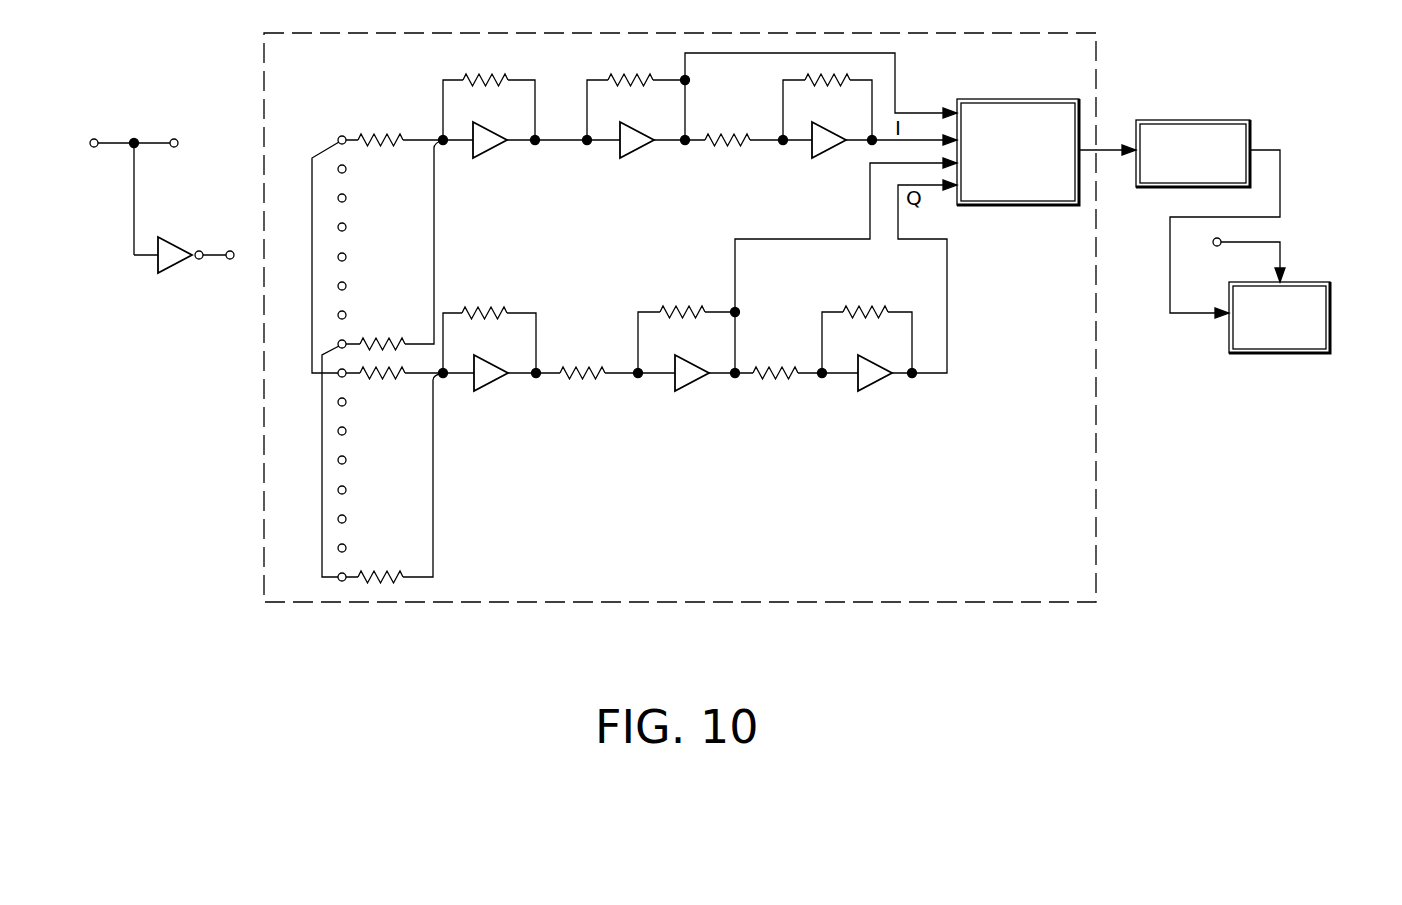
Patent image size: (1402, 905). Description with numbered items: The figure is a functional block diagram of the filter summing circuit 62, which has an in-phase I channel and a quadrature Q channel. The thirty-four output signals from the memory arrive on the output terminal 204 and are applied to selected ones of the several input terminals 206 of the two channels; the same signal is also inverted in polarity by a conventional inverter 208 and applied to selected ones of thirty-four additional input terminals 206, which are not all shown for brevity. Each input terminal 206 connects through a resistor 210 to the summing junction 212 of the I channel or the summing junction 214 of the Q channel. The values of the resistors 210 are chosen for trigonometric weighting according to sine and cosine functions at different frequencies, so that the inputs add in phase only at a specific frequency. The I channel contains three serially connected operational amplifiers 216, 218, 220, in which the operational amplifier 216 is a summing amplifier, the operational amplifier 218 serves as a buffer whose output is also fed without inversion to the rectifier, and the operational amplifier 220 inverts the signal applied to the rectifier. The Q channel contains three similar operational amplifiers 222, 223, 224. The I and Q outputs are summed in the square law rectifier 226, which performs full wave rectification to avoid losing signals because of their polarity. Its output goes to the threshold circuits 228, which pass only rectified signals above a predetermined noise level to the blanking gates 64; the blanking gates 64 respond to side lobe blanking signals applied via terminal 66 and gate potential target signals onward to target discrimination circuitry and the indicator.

The output terminal 204 is at (95, 138).
The inverter 208 is at (187, 247).
The filter summing circuit 62 is at (1100, 492).
The input terminals 206 is at (339, 137).
The resistor 210 is at (395, 136).
The summing junction 212 is at (445, 146).
The summing junction 214 is at (445, 379).
The operational amplifier 216 is at (491, 134).
The operational amplifier 218 is at (641, 134).
The operational amplifier 220 is at (821, 134).
The operational amplifier 222 is at (488, 362).
The operational amplifier 223 is at (690, 362).
The operational amplifier 224 is at (870, 362).
The square law rectifier 226 is at (1054, 98).
The threshold circuits 228 is at (1242, 120).
The terminal 66 is at (1213, 244).
The blanking gates 64 is at (1311, 282).